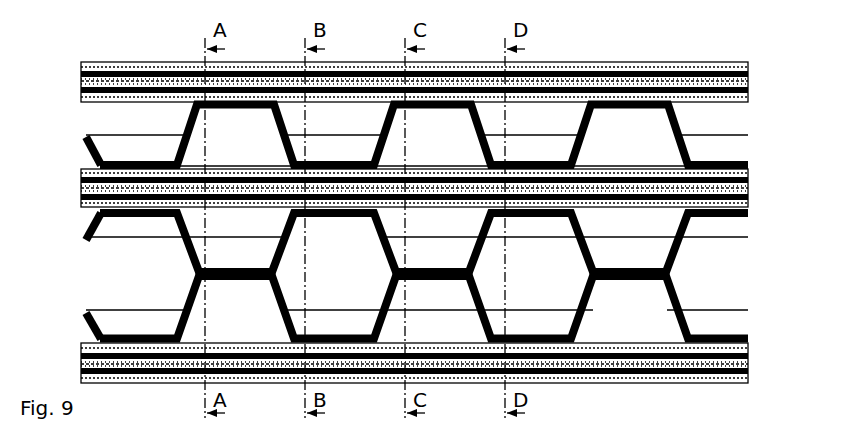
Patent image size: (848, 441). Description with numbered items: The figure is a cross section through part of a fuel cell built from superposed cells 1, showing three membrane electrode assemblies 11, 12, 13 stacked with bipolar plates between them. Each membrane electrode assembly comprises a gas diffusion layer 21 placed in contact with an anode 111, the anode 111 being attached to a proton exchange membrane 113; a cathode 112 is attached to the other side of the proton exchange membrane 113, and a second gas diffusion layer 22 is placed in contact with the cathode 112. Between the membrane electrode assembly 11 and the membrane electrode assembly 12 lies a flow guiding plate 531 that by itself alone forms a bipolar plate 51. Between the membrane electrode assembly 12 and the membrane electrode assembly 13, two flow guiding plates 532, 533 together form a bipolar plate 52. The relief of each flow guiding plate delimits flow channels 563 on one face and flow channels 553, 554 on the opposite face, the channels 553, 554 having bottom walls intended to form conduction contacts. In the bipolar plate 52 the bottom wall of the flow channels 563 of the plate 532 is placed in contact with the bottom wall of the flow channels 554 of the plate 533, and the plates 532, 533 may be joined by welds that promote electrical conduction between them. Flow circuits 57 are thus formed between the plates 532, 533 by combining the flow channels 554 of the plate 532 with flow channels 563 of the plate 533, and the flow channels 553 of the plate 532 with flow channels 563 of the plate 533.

The cell 1 is at (649, 47).
The membrane electrode assembly 11 is at (548, 54).
The membrane electrode assembly 12 is at (78, 191).
The membrane electrode assembly 13 is at (78, 366).
The gas diffusion layer 21 is at (81, 66).
The gas diffusion layer 22 is at (81, 95).
The anode 111 is at (748, 72).
The cathode 112 is at (748, 88).
The proton exchange membrane 113 is at (81, 81).
The bipolar plate 51 is at (691, 124).
The bipolar plate 52 is at (691, 258).
The flow guiding plate 531 is at (78, 145).
The flow guiding plate 532 is at (78, 240).
The flow guiding plate 533 is at (78, 315).
The flow channel 553 is at (456, 165).
The flow channel 554 is at (256, 158).
The flow channel 563 is at (158, 131).
The flow circuit 57 is at (357, 305).